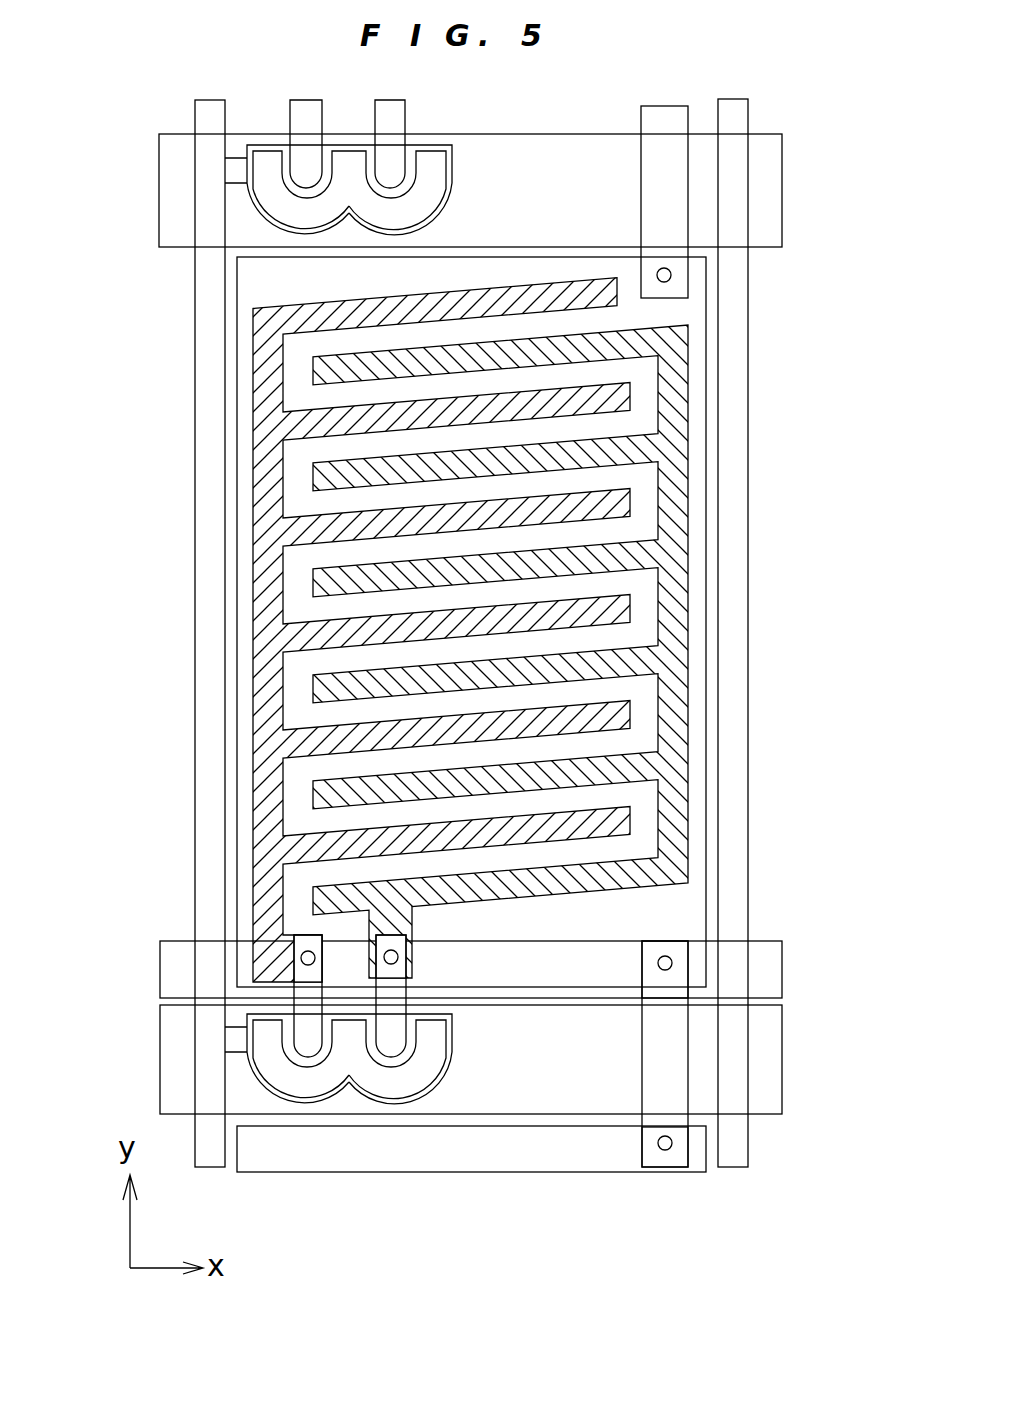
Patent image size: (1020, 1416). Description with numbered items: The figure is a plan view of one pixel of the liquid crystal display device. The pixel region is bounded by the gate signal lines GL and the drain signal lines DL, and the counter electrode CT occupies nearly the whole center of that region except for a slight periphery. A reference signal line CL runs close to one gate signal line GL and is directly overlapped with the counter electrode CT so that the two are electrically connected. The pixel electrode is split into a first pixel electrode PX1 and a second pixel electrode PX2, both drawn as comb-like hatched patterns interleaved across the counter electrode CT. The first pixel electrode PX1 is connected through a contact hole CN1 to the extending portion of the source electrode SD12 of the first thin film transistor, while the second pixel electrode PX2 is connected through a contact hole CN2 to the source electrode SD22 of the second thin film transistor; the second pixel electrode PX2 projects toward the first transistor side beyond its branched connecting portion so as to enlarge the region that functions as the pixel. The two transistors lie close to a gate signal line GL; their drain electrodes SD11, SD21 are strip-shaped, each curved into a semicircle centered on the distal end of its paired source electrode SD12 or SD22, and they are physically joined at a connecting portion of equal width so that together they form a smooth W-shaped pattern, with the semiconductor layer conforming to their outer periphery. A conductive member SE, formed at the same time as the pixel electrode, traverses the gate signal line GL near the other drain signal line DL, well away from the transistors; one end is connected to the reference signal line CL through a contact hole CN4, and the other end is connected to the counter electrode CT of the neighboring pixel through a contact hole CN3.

The gate signal line GL is at (172, 193).
The drain signal line DL is at (195, 725).
The reference signal line CL is at (772, 968).
The conductive member SE is at (690, 1065).
The counter electrode CT is at (242, 378).
The first pixel electrode PX1 is at (260, 457).
The second pixel electrode PX2 is at (677, 443).
The contact hole CN1 is at (302, 950).
The contact hole CN2 is at (398, 958).
The contact hole CN3 is at (667, 1150).
The contact hole CN4 is at (672, 963).
The drain electrode SD11 is at (283, 1078).
The source electrode SD12 is at (303, 998).
The drain electrode SD21 is at (383, 1087).
The source electrode SD22 is at (395, 1000).